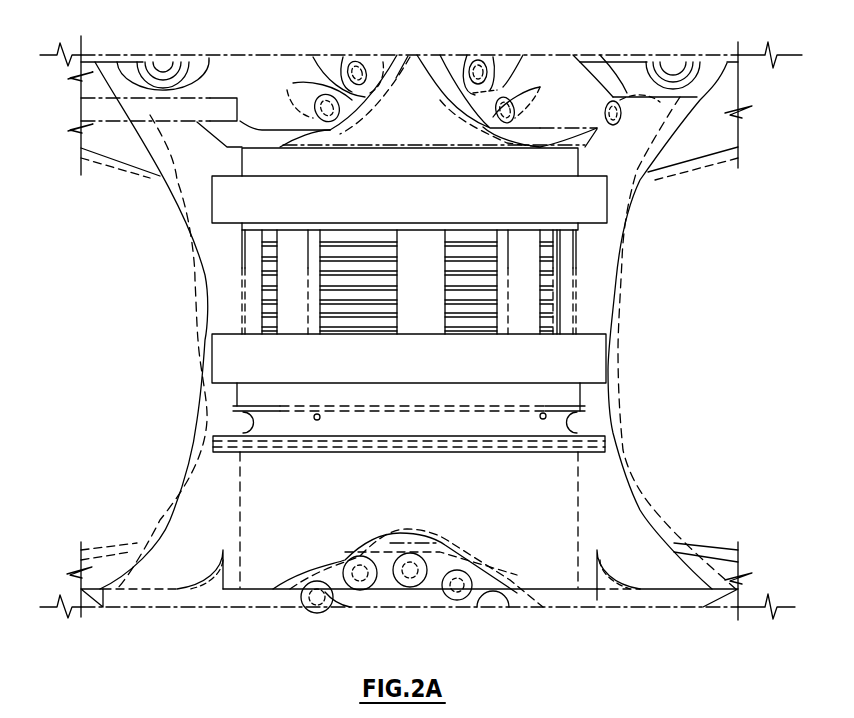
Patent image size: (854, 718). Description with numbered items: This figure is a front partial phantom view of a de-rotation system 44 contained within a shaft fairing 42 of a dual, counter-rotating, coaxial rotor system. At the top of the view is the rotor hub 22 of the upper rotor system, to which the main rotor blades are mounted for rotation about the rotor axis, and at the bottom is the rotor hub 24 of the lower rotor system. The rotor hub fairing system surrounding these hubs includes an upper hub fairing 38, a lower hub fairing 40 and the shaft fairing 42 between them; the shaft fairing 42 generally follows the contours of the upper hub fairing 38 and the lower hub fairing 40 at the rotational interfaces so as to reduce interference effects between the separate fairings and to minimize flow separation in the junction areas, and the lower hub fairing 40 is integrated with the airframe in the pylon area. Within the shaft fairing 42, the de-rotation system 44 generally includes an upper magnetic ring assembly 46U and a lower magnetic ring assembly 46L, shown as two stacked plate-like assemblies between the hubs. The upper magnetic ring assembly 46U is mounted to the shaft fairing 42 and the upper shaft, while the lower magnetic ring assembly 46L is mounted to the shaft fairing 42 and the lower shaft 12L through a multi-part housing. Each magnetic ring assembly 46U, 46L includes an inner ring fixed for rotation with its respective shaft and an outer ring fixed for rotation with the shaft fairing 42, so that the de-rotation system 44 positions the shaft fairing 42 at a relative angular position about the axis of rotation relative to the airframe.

The rotor hub 22 is at (407, 70).
The upper hub fairing 38 is at (722, 163).
The shaft fairing 42 is at (198, 295).
The de-rotation system 44 is at (647, 313).
The upper magnetic ring assembly 46U is at (588, 207).
The lower magnetic ring assembly 46L is at (587, 362).
The lower hub fairing 40 is at (709, 550).
The rotor hub 24 is at (258, 598).
The lower rotor shaft 12L is at (545, 572).